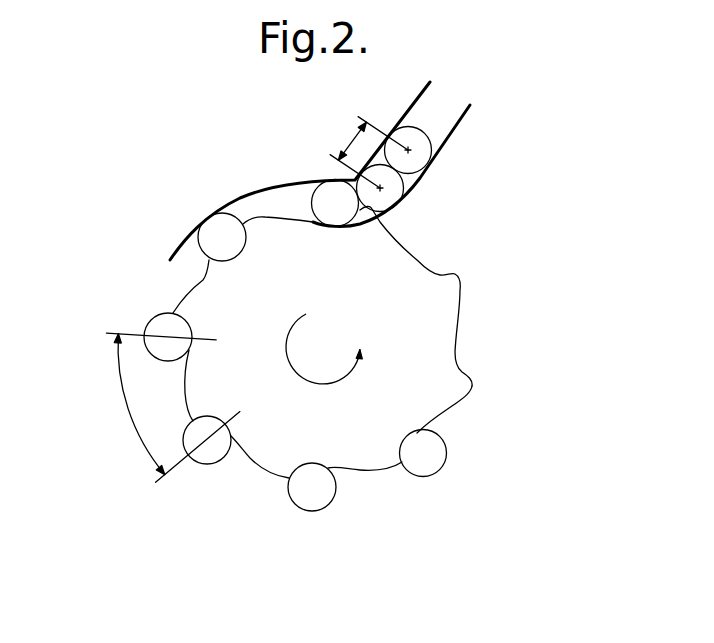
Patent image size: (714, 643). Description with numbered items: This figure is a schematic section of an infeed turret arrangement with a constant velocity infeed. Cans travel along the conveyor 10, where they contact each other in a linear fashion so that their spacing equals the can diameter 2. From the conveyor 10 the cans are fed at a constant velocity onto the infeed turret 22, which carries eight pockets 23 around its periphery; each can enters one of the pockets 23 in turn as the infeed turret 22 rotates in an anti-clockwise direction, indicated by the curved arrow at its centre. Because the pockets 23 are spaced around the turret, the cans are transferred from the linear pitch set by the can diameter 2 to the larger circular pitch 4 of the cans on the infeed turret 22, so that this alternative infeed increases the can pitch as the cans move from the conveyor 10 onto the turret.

The can diameter 2 is at (351, 140).
The circular pitch 4 is at (122, 387).
The conveyor 10 is at (458, 130).
The infeed turret 22 is at (433, 303).
The pockets 23 is at (445, 412).